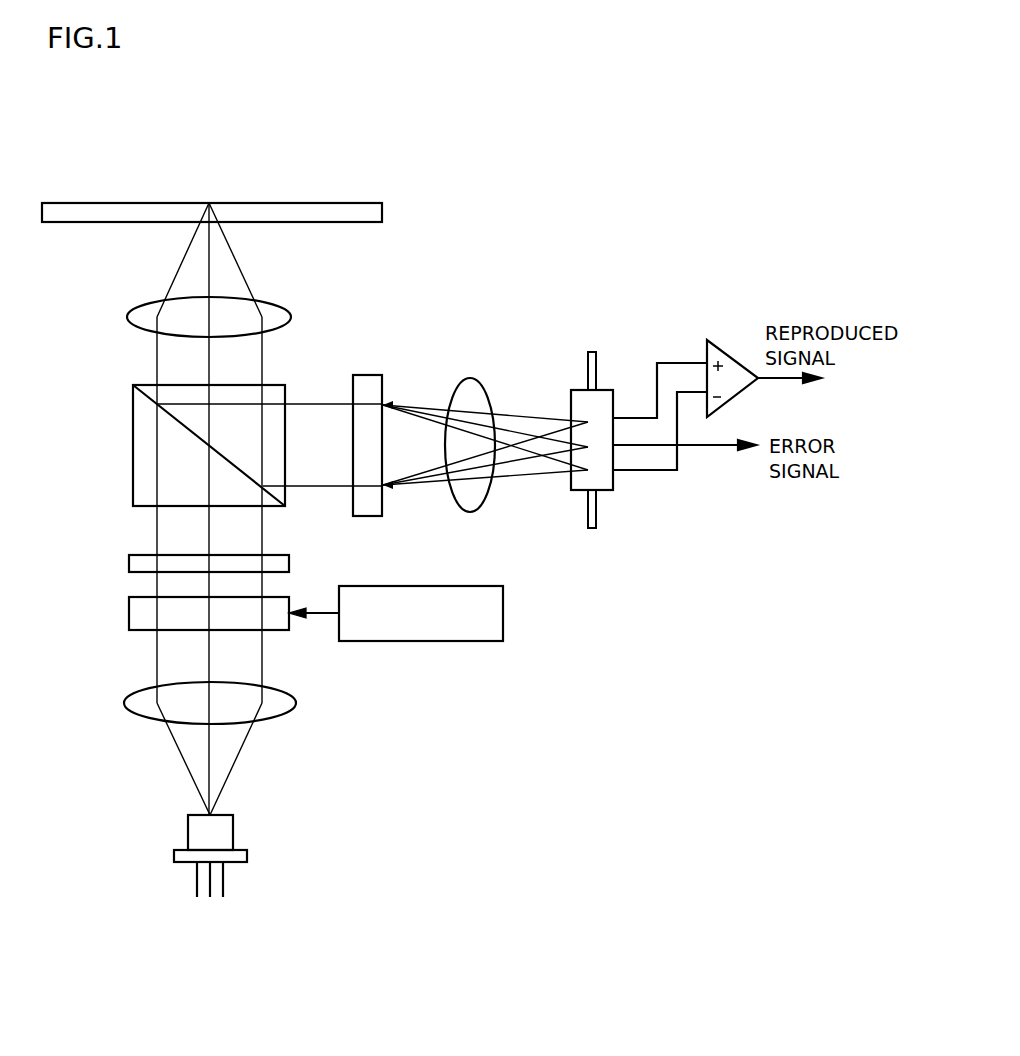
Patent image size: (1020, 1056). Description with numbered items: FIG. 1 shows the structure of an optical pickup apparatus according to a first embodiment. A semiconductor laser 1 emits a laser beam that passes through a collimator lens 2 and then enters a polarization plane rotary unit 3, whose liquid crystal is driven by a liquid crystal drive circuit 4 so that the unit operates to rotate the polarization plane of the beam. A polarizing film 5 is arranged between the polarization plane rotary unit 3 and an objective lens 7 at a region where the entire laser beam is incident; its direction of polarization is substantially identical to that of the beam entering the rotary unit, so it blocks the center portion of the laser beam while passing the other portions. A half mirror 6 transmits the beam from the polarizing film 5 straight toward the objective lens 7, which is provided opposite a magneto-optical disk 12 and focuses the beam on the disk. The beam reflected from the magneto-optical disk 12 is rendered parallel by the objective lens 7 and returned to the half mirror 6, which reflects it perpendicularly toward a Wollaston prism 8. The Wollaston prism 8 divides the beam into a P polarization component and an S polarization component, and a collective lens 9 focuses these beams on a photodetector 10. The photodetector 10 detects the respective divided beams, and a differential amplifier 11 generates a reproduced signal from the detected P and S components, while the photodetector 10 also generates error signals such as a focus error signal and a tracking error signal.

The semiconductor laser 1 is at (243, 863).
The collimator lens 2 is at (293, 710).
The polarization plane rotary unit 3 is at (289, 619).
The liquid crystal drive circuit 4 is at (480, 641).
The polarizing film 5 is at (289, 561).
The half mirror 6 is at (136, 493).
The objective lens 7 is at (291, 306).
The Wollaston prism 8 is at (375, 516).
The collective lens 9 is at (474, 500).
The photodetector 10 is at (609, 492).
The differential amplifier 11 is at (732, 348).
The magneto-optical disk 12 is at (370, 222).